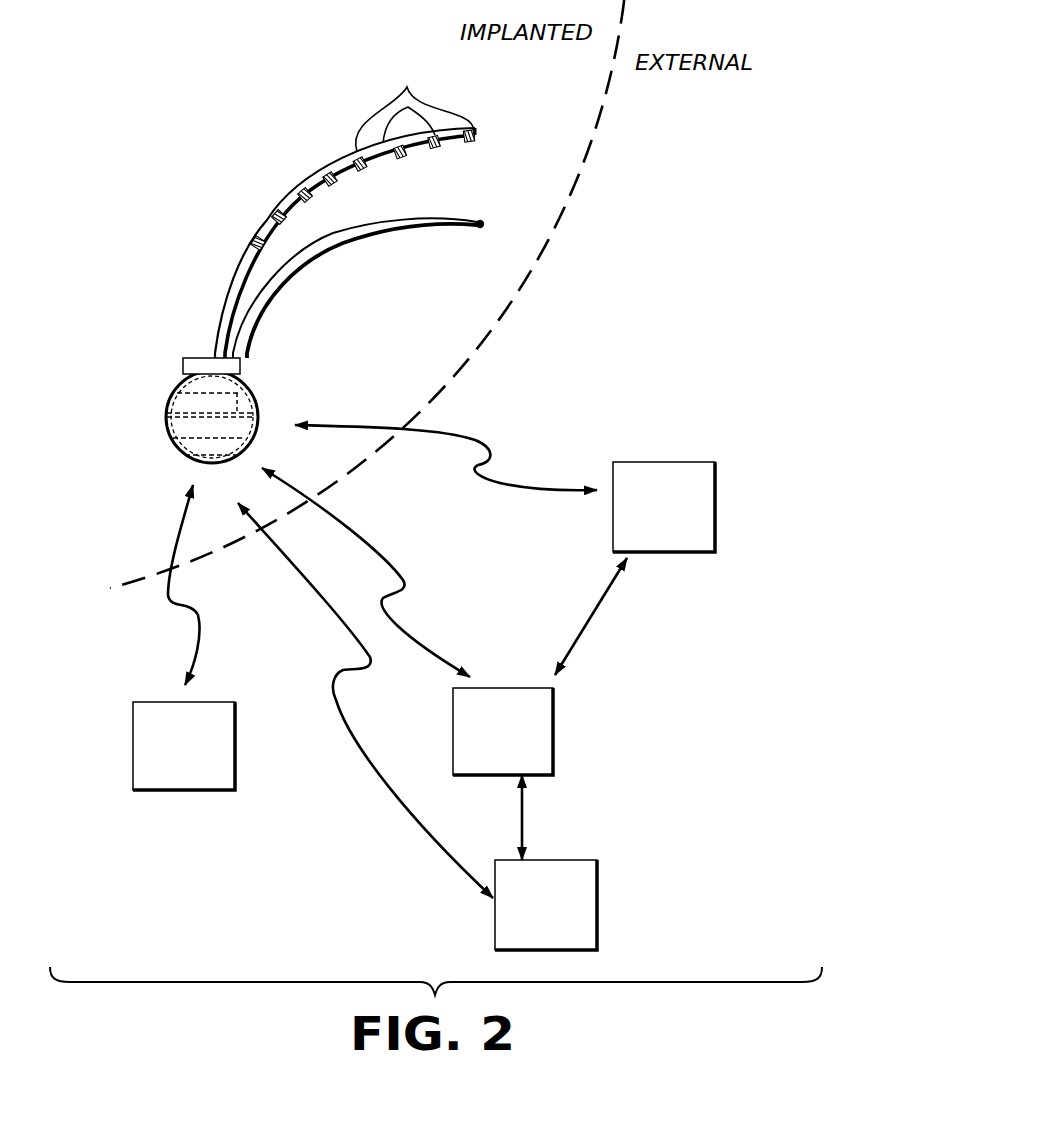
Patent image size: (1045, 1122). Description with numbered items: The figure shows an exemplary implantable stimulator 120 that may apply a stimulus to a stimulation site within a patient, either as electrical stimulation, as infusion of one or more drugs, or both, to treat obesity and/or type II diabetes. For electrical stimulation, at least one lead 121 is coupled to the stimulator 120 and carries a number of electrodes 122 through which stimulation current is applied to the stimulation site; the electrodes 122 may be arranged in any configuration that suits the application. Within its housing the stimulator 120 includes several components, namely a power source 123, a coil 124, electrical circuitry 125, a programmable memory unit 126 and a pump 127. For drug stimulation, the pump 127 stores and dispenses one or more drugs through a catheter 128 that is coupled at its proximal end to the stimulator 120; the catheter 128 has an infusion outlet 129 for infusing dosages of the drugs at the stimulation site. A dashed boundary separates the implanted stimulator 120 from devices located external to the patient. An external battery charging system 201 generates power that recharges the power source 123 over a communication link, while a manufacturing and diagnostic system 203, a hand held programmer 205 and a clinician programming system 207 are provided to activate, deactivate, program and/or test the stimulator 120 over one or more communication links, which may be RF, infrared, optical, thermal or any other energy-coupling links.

The stimulator 120 is at (240, 375).
The lead 121 is at (345, 209).
The electrodes 122 is at (415, 106).
The power source 123 is at (193, 450).
The coil 124 is at (253, 400).
The electrical circuitry 125 is at (180, 427).
The programmable memory unit 126 is at (178, 403).
The pump 127 is at (192, 384).
The catheter 128 is at (391, 271).
The infusion outlet 129 is at (487, 222).
The external battery charging system (EBCS) 201 is at (133, 743).
The manufacturing and diagnostic system (MDS) 203 is at (660, 462).
The hand held programmer (HHP) 205 is at (553, 730).
The clinician programming system (CPS) 207 is at (597, 897).